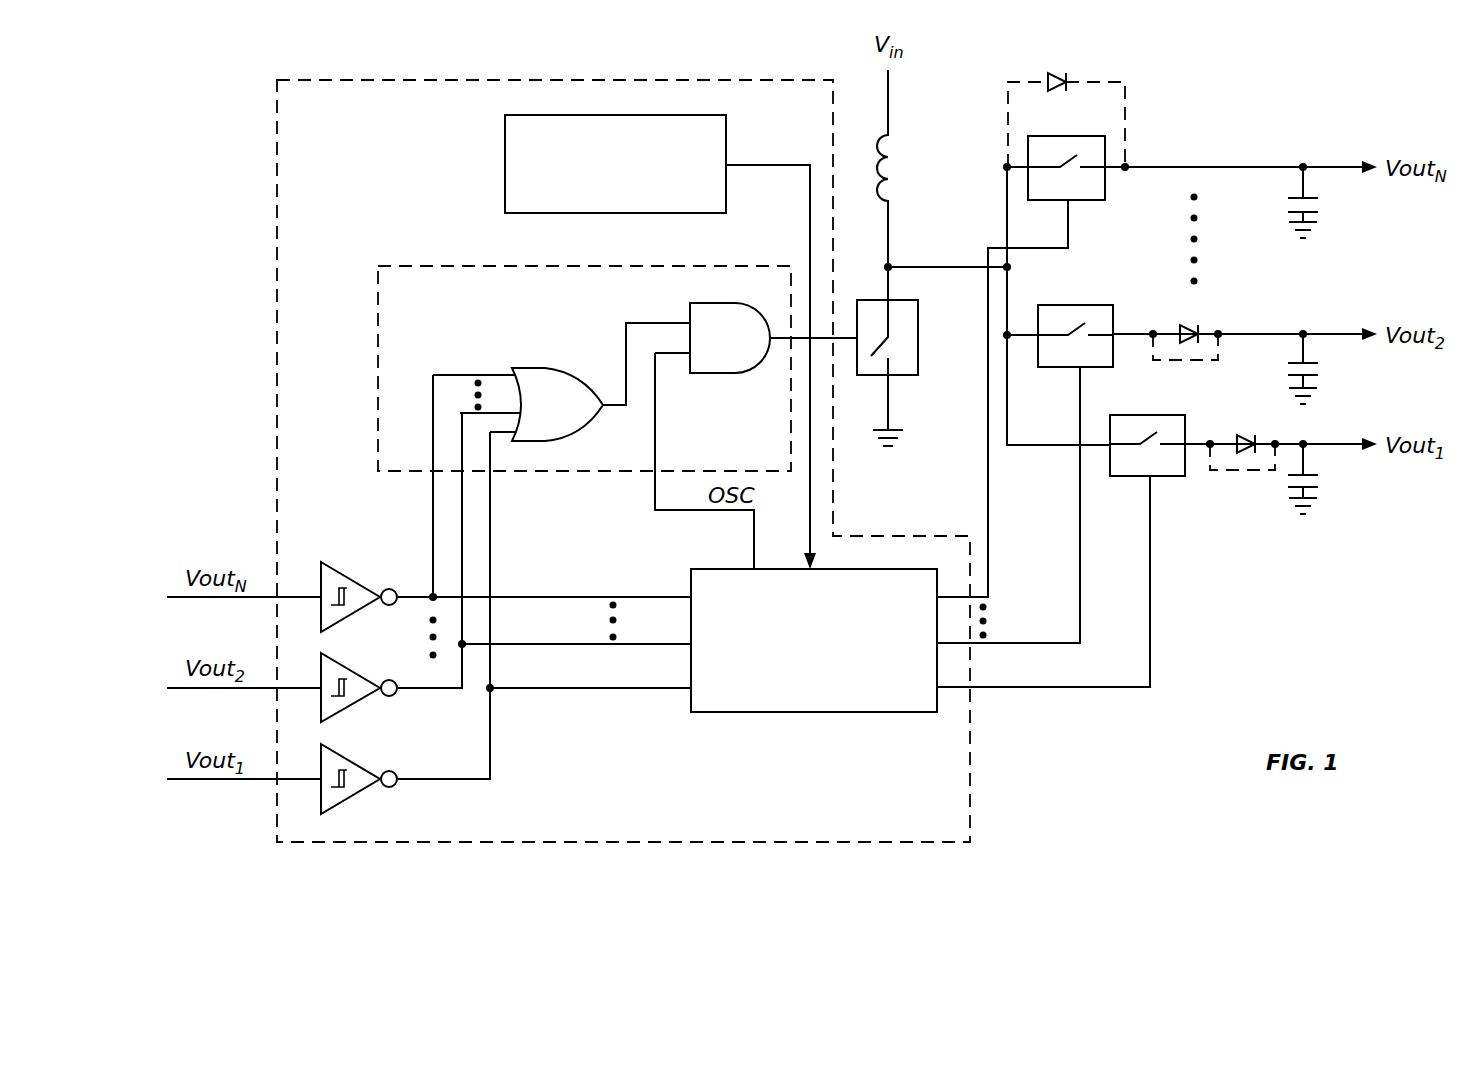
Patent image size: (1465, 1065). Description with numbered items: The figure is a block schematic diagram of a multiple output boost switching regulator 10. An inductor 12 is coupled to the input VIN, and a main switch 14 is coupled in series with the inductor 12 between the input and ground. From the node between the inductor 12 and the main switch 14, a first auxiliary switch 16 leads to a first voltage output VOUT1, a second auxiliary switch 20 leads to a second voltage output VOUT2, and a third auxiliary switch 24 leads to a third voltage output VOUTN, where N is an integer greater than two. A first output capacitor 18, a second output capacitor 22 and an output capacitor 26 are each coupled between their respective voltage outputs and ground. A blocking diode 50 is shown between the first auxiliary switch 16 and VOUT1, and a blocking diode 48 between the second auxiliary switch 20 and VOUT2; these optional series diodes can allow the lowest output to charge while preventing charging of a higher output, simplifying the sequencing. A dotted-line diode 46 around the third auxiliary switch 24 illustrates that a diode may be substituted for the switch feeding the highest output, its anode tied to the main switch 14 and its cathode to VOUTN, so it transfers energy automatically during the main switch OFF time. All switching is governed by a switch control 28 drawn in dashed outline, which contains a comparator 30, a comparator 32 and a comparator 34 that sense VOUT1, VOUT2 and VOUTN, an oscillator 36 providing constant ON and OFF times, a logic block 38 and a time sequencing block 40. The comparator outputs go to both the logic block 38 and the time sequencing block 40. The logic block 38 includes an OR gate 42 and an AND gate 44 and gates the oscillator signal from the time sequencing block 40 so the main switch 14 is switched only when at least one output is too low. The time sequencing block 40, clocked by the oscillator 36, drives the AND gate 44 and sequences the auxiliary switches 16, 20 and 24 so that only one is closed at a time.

The switching regulator 10 is at (1288, 86).
The inductor 12 is at (893, 148).
The main switch 14 is at (904, 300).
The first auxiliary switch 16 is at (1185, 420).
The first output capacitor 18 is at (1318, 487).
The second auxiliary switch 20 is at (1113, 308).
The second output capacitor 22 is at (1318, 375).
The third auxiliary switch 24 is at (1105, 140).
The output capacitor 26 is at (1318, 212).
The switch control 28 is at (460, 80).
The comparator 30 is at (374, 776).
The comparator 32 is at (337, 662).
The comparator 34 is at (355, 580).
The oscillator 36 is at (505, 178).
The logic block 38 is at (376, 348).
The time sequencing block 40 is at (752, 712).
The OR gate 42 is at (520, 368).
The AND gate 44 is at (706, 303).
The diode 46 is at (1066, 78).
The blocking diode 48 is at (1200, 327).
The blocking diode 50 is at (1258, 441).